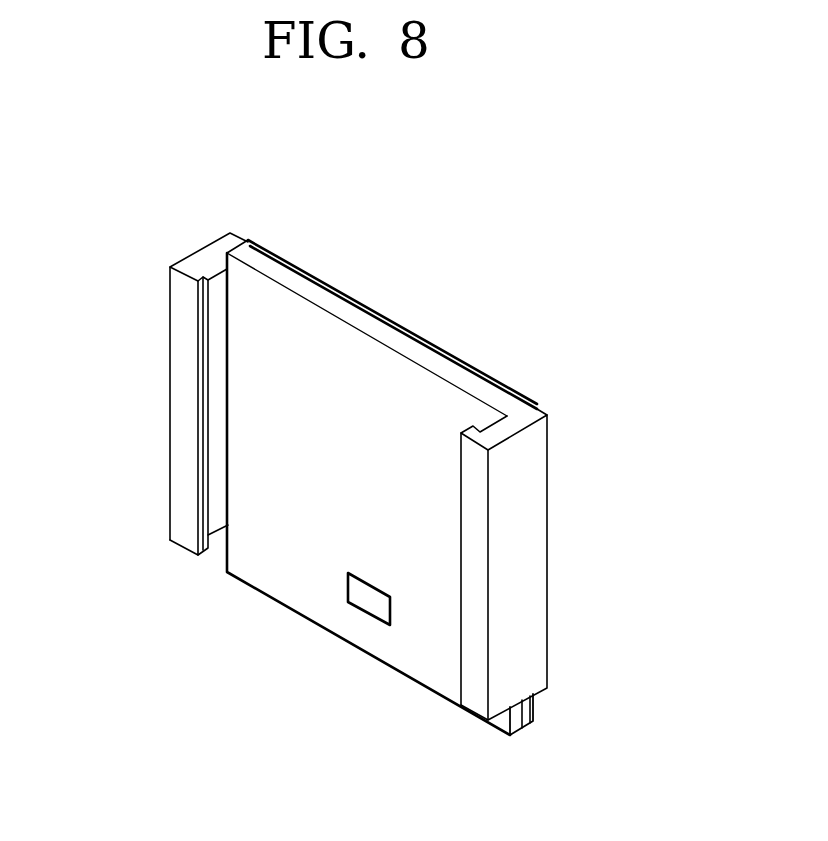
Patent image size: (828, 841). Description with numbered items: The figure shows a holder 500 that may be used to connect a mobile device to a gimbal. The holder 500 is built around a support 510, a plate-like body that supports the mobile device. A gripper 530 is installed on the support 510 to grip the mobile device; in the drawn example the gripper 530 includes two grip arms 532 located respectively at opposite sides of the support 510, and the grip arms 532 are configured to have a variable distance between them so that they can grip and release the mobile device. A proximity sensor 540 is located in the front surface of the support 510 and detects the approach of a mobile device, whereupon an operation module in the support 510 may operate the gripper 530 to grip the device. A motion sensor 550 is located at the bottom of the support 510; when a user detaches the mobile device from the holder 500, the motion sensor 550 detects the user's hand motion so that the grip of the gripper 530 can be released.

The holder 500 is at (500, 282).
The support 510 is at (375, 367).
The gripper 530 is at (548, 502).
The grip arms 532 is at (183, 364).
The proximity sensor 540 is at (370, 597).
The motion sensor 550 is at (522, 720).